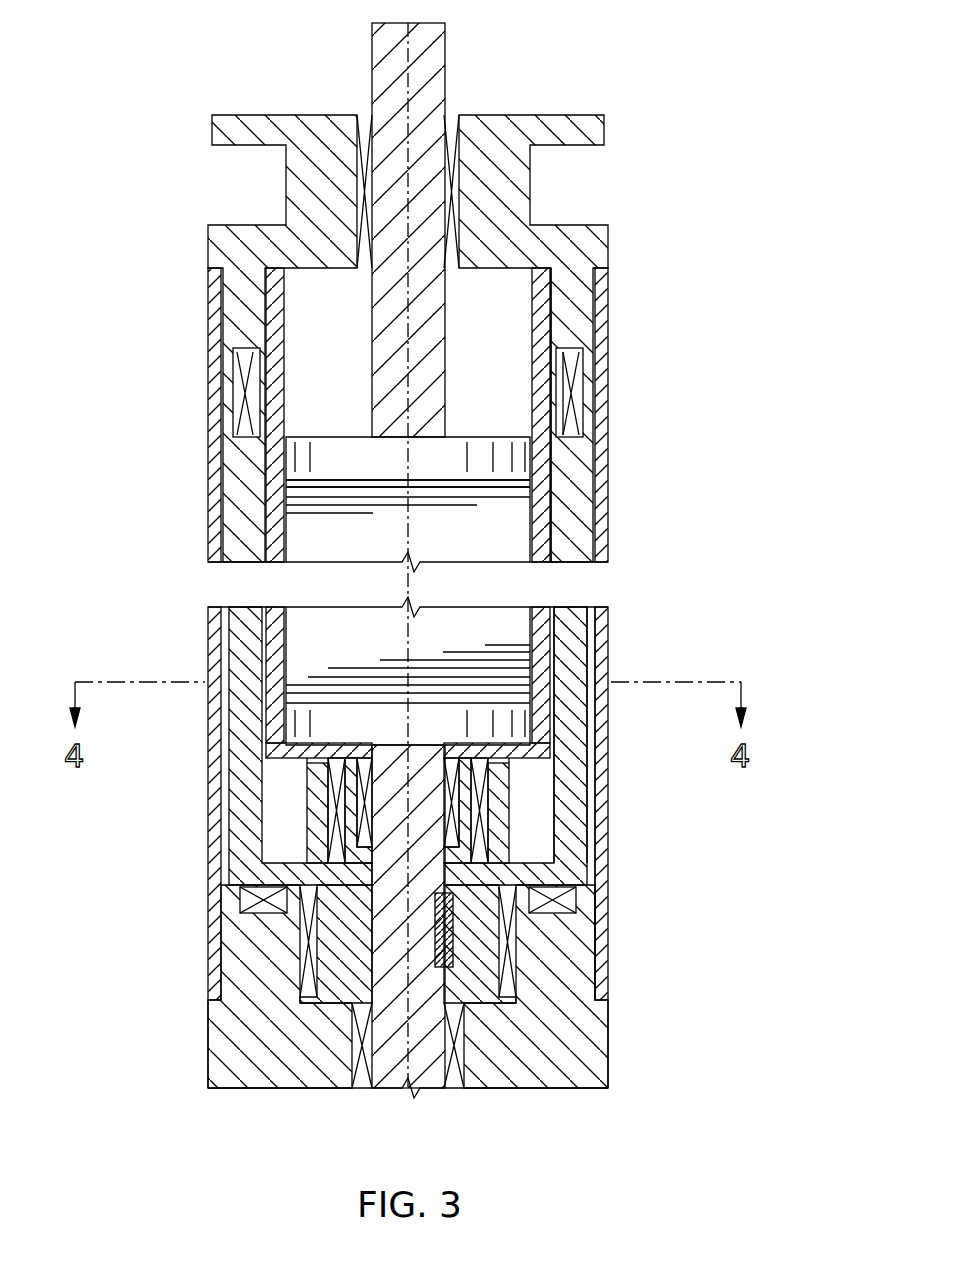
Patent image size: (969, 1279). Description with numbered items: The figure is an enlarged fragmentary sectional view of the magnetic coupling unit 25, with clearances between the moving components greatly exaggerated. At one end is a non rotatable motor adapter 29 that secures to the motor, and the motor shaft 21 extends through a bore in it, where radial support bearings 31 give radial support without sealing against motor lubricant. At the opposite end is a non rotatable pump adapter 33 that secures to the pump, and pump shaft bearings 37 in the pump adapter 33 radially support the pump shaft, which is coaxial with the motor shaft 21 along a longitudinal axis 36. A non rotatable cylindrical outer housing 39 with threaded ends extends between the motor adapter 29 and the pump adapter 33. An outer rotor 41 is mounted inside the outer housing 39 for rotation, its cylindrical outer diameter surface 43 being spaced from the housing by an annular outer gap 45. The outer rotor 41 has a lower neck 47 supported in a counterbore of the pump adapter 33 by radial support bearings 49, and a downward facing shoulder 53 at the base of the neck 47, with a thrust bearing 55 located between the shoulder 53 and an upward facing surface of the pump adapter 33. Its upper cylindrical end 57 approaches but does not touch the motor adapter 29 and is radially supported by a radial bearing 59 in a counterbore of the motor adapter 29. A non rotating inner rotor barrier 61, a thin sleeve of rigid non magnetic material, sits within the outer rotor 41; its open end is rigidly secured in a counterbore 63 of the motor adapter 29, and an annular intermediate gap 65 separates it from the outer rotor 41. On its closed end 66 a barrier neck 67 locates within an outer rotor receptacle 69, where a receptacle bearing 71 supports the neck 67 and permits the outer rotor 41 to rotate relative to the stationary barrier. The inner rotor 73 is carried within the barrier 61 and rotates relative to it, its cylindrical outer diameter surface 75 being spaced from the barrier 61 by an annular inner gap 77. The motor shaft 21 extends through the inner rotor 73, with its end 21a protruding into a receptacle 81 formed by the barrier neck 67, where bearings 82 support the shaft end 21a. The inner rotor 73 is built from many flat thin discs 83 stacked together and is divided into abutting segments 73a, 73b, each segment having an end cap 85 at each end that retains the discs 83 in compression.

The motor shaft 21 is at (437, 72).
The motor shaft end 21a is at (392, 830).
The magnetic coupling unit 25 is at (402, 577).
The motor adapter 29 is at (533, 185).
The radial support bearings 31 is at (460, 198).
The pump adapter 33 is at (407, 1008).
The longitudinal axis 36 is at (407, 326).
The pump shaft bearings 37 is at (345, 1052).
The outer housing 39 is at (457, 803).
The outer rotor 41 is at (600, 830).
The outer diameter surface 43 is at (590, 724).
The annular outer gap 45 is at (592, 805).
The lower neck 47 is at (352, 1050).
The radial support bearings 49 is at (307, 943).
The downward facing shoulder 53 is at (237, 903).
The thrust bearing 55 is at (263, 910).
The upper cylindrical end 57 is at (588, 373).
The radial bearing 59 is at (575, 400).
The inner rotor barrier 61 is at (545, 360).
The counterbore 63 is at (343, 521).
The annular intermediate gap 65 is at (562, 396).
The closed end 66 is at (300, 773).
The barrier neck 67 is at (347, 812).
The outer rotor receptacle 69 is at (342, 873).
The receptacle bearing 71 is at (480, 793).
The inner rotor 73 is at (342, 591).
The inner rotor segment 73a is at (342, 520).
The inner rotor segment 73b is at (443, 622).
The outer diameter surface 75 is at (280, 517).
The annular inner gap 77 is at (283, 432).
The receptacle 81 is at (445, 783).
The bearings 82 is at (480, 845).
The discs 83 is at (513, 497).
The end cap 85 is at (242, 392).